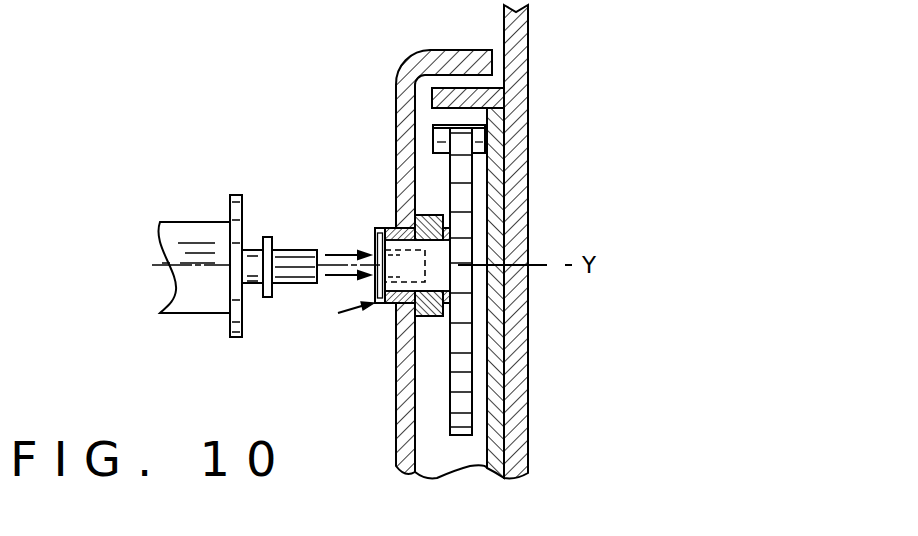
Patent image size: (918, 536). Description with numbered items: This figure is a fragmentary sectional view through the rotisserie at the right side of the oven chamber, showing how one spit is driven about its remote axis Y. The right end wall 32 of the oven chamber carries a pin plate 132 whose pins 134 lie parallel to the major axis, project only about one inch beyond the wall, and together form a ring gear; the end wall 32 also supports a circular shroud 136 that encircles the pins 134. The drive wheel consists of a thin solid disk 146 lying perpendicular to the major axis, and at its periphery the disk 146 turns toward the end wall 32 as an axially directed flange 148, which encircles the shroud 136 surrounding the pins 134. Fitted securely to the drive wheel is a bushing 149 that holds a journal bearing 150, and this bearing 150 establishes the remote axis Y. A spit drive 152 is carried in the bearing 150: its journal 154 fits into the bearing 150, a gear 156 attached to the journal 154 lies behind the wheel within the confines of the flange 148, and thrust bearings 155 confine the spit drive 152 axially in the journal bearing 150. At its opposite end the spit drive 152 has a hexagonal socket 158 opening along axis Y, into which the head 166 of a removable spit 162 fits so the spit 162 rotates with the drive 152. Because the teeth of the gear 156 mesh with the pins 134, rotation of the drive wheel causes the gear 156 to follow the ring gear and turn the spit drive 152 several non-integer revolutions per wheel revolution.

The right end wall 32 is at (522, 180).
The pin plate 132 is at (497, 343).
The pins 134 is at (487, 139).
The circular shroud 136 is at (520, 62).
The disk 146 is at (405, 444).
The axially directed flange 148 is at (447, 62).
The bushing 149 is at (427, 213).
The journal bearing 150 is at (386, 312).
The spit drive 152 is at (332, 316).
The journal 154 is at (437, 270).
The thrust bearings 155 is at (392, 228).
The gear 156 is at (463, 437).
The hexagonal socket 158 is at (372, 247).
The spit 162 is at (172, 247).
The head 166 is at (253, 252).